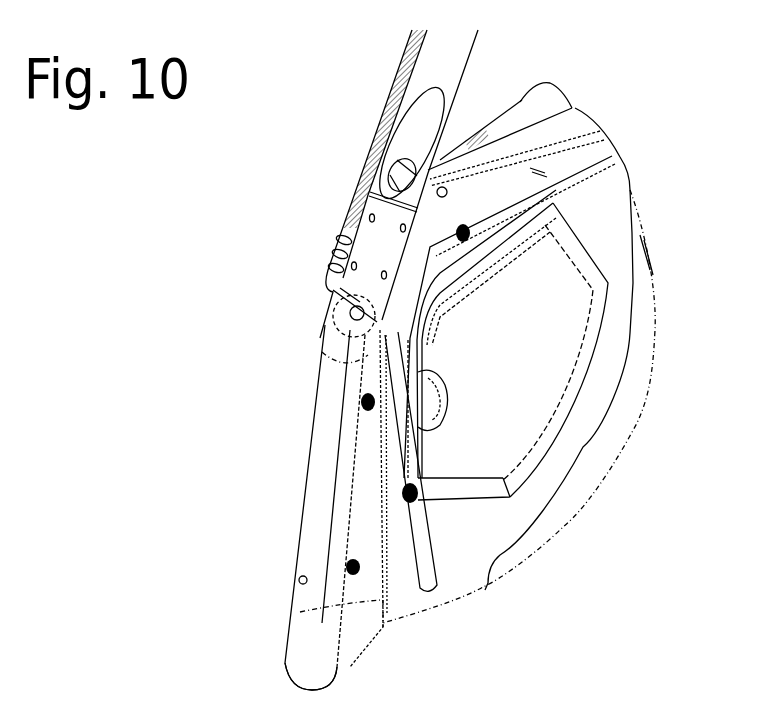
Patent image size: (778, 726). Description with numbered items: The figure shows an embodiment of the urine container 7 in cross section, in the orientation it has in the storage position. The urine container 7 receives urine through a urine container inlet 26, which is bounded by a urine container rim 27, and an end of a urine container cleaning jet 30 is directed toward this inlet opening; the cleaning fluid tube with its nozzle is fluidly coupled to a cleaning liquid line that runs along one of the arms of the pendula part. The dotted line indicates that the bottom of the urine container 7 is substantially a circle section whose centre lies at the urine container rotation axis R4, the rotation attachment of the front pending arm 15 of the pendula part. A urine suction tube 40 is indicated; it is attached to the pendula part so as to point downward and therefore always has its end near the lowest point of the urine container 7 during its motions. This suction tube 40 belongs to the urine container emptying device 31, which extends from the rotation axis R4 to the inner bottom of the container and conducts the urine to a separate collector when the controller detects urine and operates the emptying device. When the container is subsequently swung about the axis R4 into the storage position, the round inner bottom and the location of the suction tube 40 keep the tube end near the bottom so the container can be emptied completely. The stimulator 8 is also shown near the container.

The urine container 7 is at (570, 450).
The stimulator 8 is at (317, 665).
The front pending arm 15 is at (443, 88).
The urine container inlet 26 is at (278, 432).
The urine container rim 27 is at (567, 104).
The urine container cleaning jet 30 is at (437, 400).
The urine container emptying device 31 is at (334, 201).
The urine suction tube 40 is at (417, 540).
The urine container rotation axis R4 is at (353, 313).